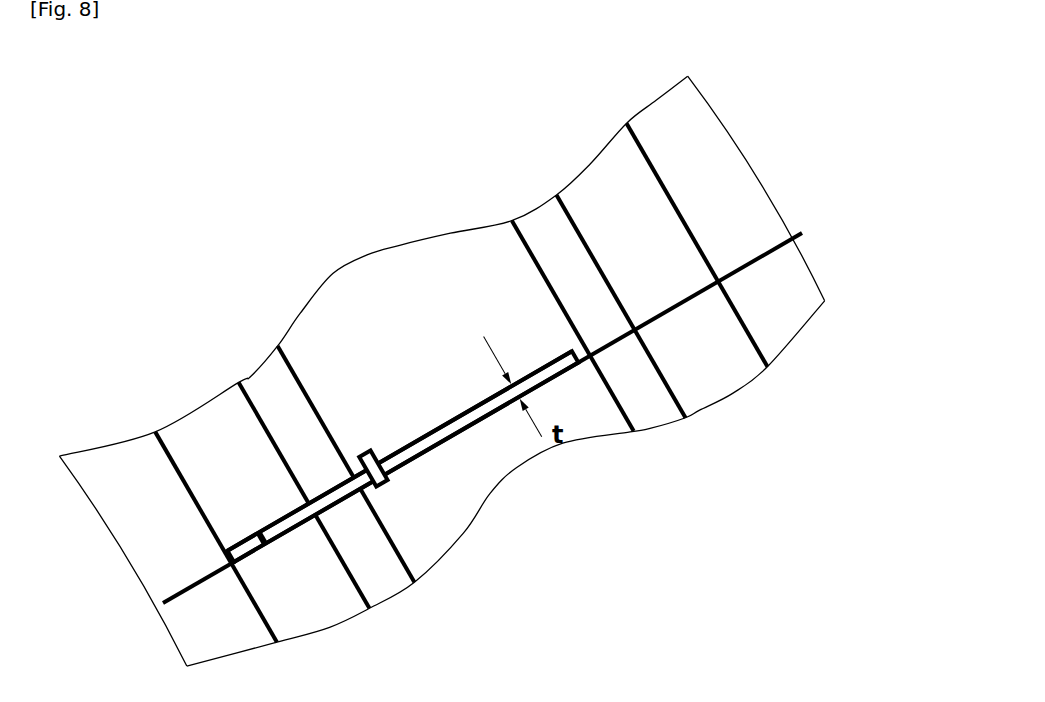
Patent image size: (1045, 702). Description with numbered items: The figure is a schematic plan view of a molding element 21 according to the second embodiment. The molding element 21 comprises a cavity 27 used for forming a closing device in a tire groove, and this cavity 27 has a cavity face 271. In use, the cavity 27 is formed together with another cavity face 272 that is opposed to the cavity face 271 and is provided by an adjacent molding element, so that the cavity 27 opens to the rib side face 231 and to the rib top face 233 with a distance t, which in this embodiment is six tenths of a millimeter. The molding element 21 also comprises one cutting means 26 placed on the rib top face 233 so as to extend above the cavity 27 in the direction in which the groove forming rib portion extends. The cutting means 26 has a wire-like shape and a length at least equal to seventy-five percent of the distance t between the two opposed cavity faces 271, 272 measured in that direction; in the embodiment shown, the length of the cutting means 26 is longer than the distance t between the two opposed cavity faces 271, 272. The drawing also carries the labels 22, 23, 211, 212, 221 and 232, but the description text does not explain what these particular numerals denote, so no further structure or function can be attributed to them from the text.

The molding element 21 is at (218, 273).
The second sheet 22 is at (776, 140).
The connecting portion 23 is at (357, 293).
The cutting means 26 is at (360, 447).
The cavity 27 is at (487, 420).
The first center line 211 is at (797, 220).
The second center line 212 is at (167, 607).
The end section 221 is at (690, 132).
The rib side face 231 is at (230, 443).
The second section 232 is at (598, 202).
The rib top face 233 is at (390, 357).
The cavity face 271 is at (493, 402).
The cavity face 272 is at (403, 455).